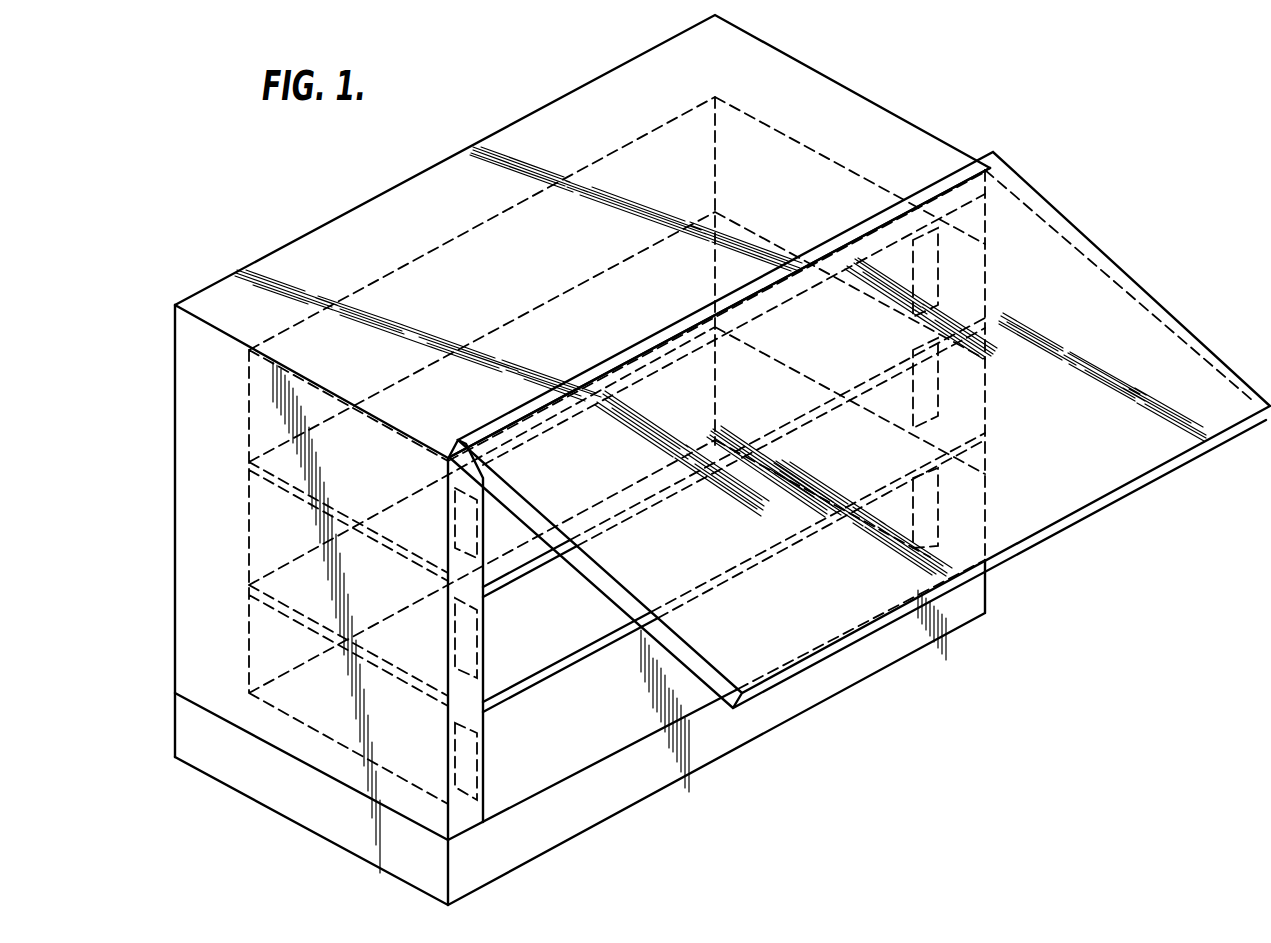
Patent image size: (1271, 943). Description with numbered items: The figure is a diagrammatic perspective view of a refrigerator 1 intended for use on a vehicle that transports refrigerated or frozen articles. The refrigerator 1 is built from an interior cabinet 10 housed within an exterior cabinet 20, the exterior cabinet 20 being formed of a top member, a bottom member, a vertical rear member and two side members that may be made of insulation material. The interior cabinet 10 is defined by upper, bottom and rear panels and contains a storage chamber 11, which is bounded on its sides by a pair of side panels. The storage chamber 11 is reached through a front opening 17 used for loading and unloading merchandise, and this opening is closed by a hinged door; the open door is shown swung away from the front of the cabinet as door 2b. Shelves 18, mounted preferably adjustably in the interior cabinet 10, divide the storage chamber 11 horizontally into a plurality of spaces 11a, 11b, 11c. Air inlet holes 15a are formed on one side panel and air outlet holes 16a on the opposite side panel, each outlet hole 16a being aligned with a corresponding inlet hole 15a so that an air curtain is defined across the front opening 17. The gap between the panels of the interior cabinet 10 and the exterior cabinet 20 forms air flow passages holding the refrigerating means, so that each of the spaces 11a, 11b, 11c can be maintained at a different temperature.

The refrigerator 1 is at (866, 127).
The lid / door 2b is at (1090, 242).
The interior cabinet 10 is at (873, 178).
The storage chamber 11 is at (719, 440).
The space 11a is at (507, 522).
The space 11b is at (583, 597).
The space 11c is at (669, 677).
The air inlet holes 15a is at (937, 280).
The air outlet holes 16a is at (453, 600).
The front opening 17 is at (535, 780).
The shelves 18 is at (510, 582).
The exterior cabinet 20 is at (313, 231).